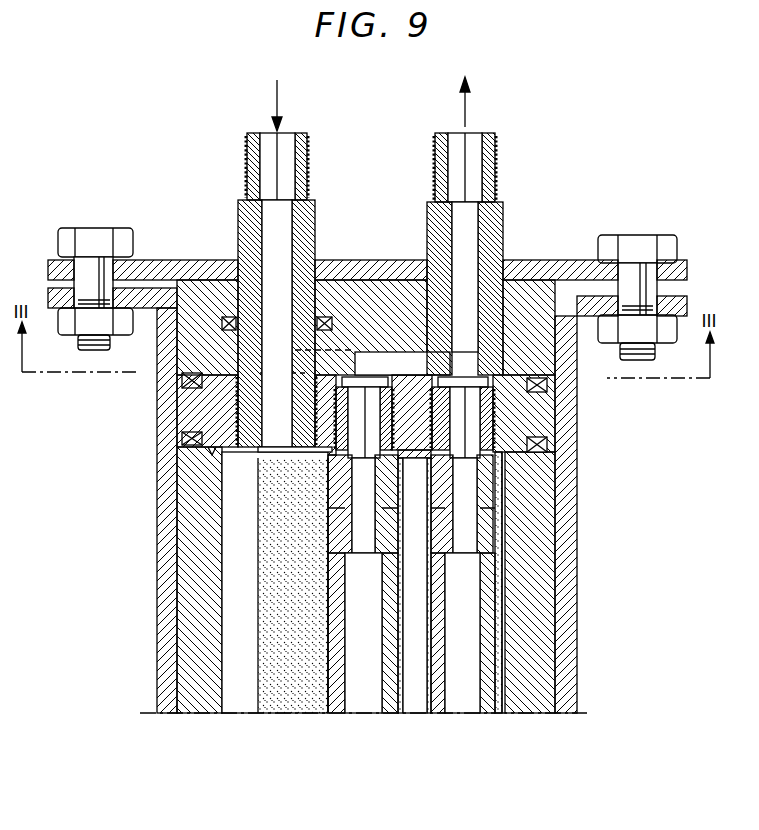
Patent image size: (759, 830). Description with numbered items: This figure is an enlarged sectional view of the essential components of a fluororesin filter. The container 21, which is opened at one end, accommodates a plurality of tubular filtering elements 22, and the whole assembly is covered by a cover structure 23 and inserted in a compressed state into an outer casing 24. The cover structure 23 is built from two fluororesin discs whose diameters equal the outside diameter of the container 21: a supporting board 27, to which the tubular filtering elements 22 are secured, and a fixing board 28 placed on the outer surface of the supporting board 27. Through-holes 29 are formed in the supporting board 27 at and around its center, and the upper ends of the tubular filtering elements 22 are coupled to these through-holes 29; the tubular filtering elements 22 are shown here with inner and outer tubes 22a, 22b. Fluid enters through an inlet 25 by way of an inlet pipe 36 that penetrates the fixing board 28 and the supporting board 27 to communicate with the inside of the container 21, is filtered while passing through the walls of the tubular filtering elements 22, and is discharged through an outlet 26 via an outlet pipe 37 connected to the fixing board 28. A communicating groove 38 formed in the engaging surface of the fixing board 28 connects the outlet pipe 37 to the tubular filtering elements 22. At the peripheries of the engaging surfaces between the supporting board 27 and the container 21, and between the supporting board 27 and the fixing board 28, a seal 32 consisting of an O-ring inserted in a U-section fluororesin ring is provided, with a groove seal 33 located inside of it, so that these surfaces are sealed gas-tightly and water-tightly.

The container 21 is at (188, 613).
The tubular filtering elements 22 is at (303, 697).
The inner tube 22a is at (442, 683).
The outer tube 22b is at (425, 698).
The cover structure 23 is at (533, 278).
The outer casing 24 is at (160, 552).
The inlet 25 is at (268, 133).
The outlet 26 is at (473, 133).
The supporting board 27 is at (550, 473).
The fixing board 28 is at (342, 280).
The through-holes 29 is at (510, 438).
The seal 32 is at (190, 432).
The groove seal 33 is at (487, 382).
The inlet pipe 36 is at (240, 227).
The outlet pipe 37 is at (493, 163).
The communicating groove 38 is at (392, 360).